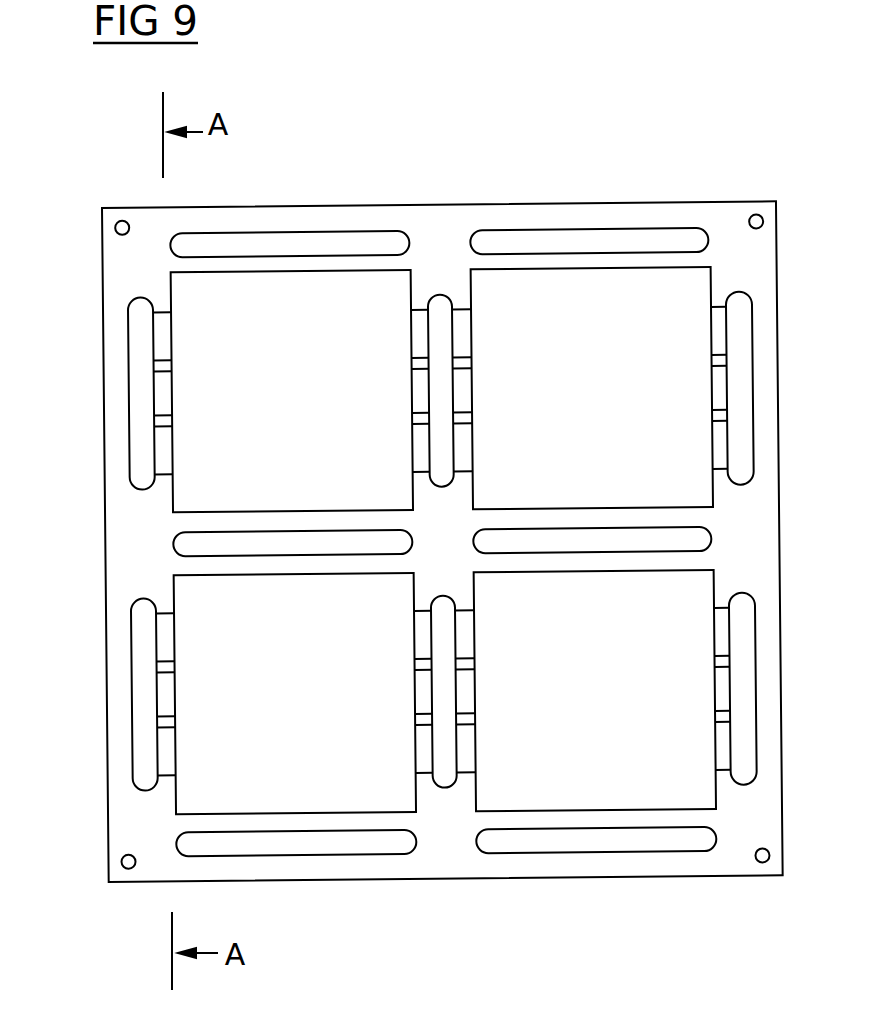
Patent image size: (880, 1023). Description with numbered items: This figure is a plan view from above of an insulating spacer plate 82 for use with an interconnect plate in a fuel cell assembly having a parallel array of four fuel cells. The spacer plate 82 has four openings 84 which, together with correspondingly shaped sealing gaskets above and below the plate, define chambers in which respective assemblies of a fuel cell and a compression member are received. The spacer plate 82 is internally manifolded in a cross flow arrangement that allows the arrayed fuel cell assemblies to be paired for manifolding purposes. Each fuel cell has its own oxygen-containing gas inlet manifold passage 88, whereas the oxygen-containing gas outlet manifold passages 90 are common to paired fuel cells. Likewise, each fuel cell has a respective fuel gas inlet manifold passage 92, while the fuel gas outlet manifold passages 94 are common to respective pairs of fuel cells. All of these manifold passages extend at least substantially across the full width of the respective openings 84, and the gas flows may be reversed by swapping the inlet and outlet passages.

The spacer plate 82 is at (106, 553).
The openings 84 is at (172, 290).
The oxygen-containing gas inlet manifold passage 88 is at (298, 240).
The oxygen-containing gas outlet manifold passage 90 is at (296, 540).
The fuel gas inlet manifold passage 92 is at (142, 403).
The fuel gas outlet manifold passage 94 is at (440, 390).